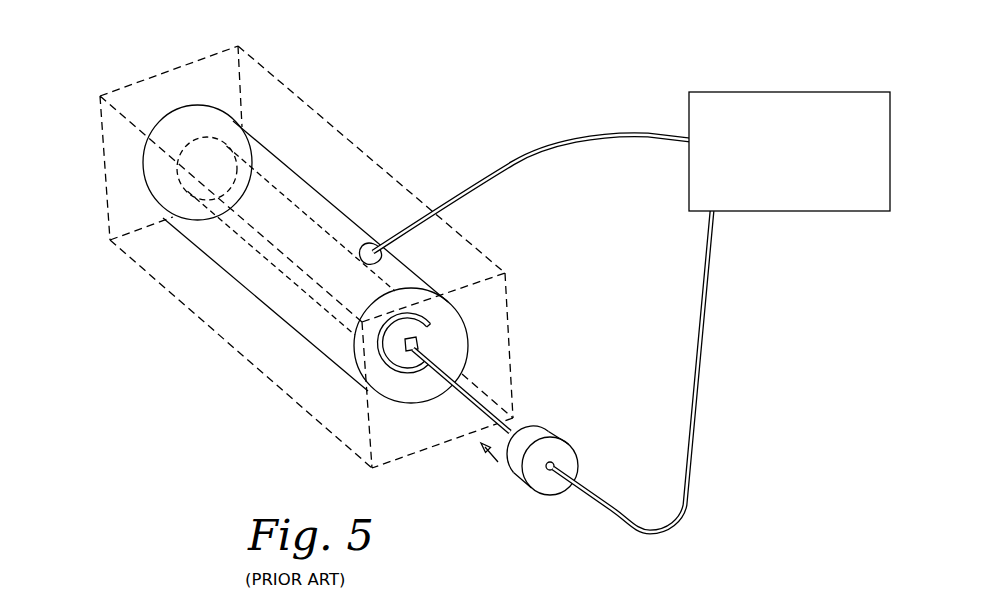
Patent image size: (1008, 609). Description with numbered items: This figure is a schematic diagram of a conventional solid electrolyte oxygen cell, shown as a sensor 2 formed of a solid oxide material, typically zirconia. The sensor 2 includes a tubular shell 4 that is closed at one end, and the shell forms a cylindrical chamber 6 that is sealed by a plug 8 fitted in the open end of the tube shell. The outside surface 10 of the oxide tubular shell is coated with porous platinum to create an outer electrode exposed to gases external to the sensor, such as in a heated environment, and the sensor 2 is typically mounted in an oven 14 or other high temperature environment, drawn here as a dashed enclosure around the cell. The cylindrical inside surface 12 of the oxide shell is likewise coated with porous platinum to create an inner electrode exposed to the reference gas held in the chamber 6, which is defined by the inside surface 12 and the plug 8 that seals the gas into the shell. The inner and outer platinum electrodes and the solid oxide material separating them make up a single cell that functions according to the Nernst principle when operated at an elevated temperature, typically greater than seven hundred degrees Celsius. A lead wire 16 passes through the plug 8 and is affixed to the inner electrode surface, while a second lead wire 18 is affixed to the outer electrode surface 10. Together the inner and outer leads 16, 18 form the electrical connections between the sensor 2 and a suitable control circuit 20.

The sensor 2 is at (323, 178).
The tubular shell 4 is at (245, 267).
The cylindrical chamber 6 is at (300, 238).
The plug 8 is at (567, 452).
The outside surface 10 is at (264, 157).
The inside surface 12 is at (435, 337).
The oven 14 is at (107, 192).
The lead wire 16 is at (493, 400).
The second lead wire 18 is at (513, 167).
The control circuit 20 is at (809, 203).